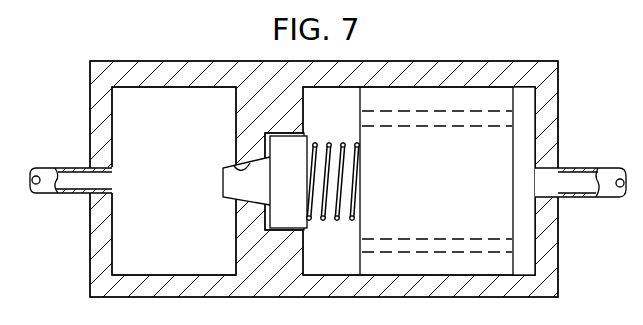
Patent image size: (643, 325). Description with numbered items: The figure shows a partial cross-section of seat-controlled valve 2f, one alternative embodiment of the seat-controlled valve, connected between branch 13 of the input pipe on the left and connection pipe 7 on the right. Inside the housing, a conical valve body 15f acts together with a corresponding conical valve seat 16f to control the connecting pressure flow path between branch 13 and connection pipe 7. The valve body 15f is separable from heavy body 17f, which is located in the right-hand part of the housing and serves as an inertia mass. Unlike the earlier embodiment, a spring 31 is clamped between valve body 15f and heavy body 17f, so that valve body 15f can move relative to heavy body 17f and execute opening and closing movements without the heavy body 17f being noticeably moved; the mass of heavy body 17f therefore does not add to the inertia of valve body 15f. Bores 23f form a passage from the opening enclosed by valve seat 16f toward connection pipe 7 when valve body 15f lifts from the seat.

The seat-controlled valve 2f is at (558, 93).
The branch 13 is at (54, 171).
The connection pipe 7 is at (590, 180).
The valve seat 16f is at (237, 167).
The valve body 15f is at (237, 185).
The spring 31 is at (328, 205).
The bores 23f is at (387, 122).
The heavy body 17f is at (505, 223).